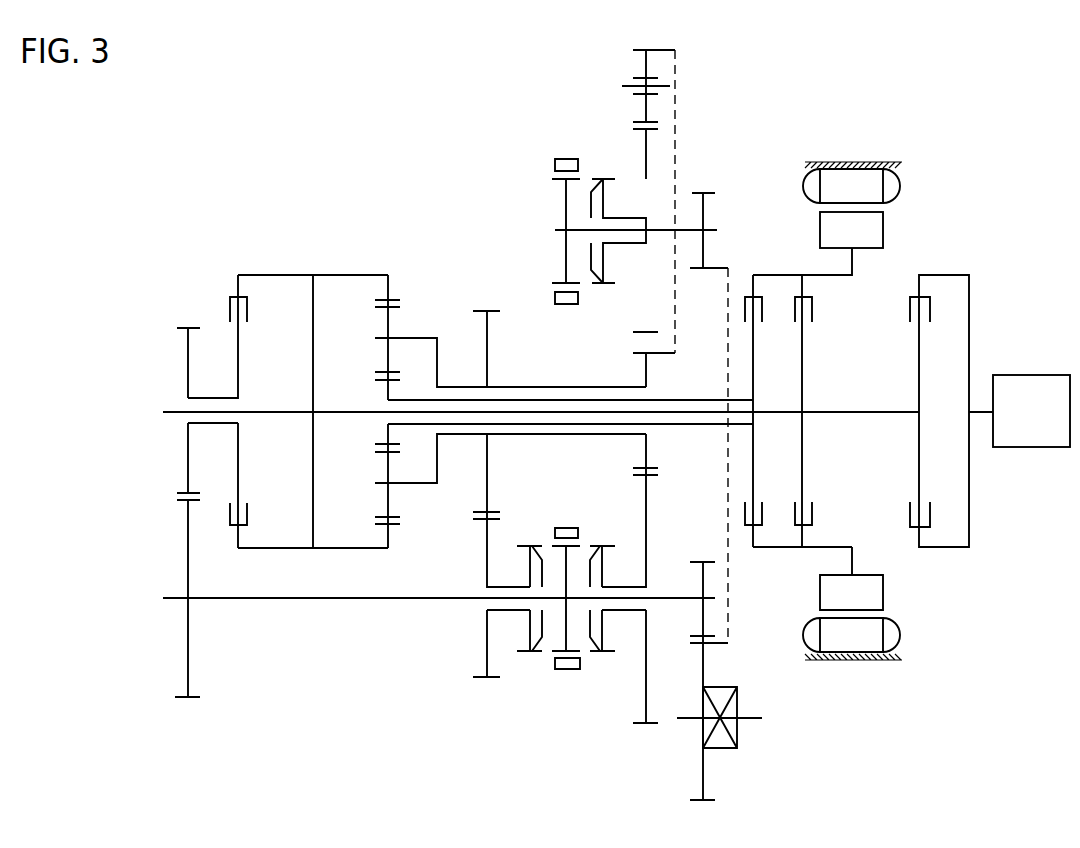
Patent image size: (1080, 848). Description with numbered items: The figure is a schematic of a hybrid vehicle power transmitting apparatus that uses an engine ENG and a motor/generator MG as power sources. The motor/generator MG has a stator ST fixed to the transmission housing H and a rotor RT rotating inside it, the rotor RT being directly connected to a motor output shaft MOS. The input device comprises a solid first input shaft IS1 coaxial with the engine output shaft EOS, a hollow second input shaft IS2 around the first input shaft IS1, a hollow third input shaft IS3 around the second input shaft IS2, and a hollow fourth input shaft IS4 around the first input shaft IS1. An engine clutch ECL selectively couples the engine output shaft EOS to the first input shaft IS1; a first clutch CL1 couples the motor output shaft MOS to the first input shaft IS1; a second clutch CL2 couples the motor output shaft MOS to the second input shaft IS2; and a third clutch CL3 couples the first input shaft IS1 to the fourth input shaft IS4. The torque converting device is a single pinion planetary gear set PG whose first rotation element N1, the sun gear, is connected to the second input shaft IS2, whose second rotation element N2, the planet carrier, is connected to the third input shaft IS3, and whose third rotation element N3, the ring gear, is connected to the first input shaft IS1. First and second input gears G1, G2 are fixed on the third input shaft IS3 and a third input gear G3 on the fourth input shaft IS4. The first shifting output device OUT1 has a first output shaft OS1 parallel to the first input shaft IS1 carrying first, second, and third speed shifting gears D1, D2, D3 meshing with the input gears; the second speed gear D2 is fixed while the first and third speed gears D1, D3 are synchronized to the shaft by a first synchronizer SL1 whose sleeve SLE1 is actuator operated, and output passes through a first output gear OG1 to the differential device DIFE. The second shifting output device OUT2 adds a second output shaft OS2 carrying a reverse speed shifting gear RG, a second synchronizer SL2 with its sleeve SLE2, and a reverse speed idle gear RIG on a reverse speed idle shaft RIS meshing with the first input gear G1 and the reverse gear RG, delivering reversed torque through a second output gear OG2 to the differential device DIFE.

The first input shaft IS1 is at (703, 410).
The second input shaft IS2 is at (684, 426).
The third input shaft IS3 is at (571, 436).
The fourth input shaft IS4 is at (213, 424).
The first output shaft OS1 is at (357, 600).
The second output shaft OS2 is at (688, 228).
The first shifting output device OUT1 is at (170, 598).
The second shifting output device OUT2 is at (546, 199).
The engine ENG is at (1031, 411).
The engine output shaft EOS is at (977, 408).
The engine clutch ECL is at (942, 297).
The motor/generator MG is at (876, 186).
The stator ST is at (851, 186).
The rotor RT is at (851, 230).
The transmission housing H is at (870, 162).
The motor output shaft MOS is at (838, 278).
The first clutch CL1 is at (797, 285).
The second clutch CL2 is at (748, 285).
The third clutch CL3 is at (232, 290).
The planetary gear set PG is at (442, 387).
The first rotation element N1 is at (376, 382).
The second rotation element N2 is at (375, 338).
The third rotation element N3 is at (395, 298).
The first input gear G1 is at (646, 370).
The second input gear G2 is at (486, 309).
The third input gear G3 is at (188, 326).
The reverse speed idle gear RIG is at (652, 46).
The reverse speed idle shaft RIS is at (628, 86).
The reverse speed shifting gear RG is at (645, 165).
The first synchronizer SL1 is at (543, 693).
The second synchronizer SL2 is at (543, 155).
The sleeve SLE1 is at (573, 675).
The sleeve SLE2 is at (571, 157).
The first output gear OG1 is at (700, 575).
The second output gear OG2 is at (705, 213).
The first forward speed shifting gear D1 is at (648, 683).
The second forward speed shifting gear D2 is at (203, 598).
The third speed shifting gear D3 is at (487, 655).
The differential device DIFE is at (740, 736).